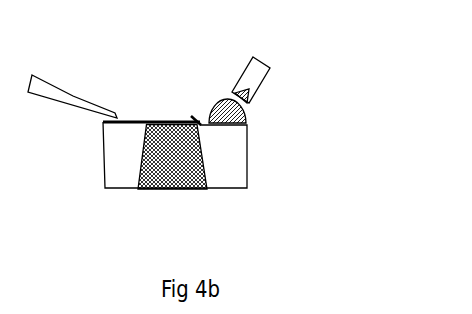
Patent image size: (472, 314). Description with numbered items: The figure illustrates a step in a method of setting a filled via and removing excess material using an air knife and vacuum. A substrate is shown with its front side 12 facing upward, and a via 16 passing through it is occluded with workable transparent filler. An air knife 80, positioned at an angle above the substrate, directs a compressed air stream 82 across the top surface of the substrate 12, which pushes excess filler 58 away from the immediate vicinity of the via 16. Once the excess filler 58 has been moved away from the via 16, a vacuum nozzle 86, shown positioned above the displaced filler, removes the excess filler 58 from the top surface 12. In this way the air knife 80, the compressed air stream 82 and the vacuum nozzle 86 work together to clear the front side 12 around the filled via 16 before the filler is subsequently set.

The front side 12 is at (103, 121).
The via 16 is at (200, 148).
The air knife 80 is at (87, 101).
The compressed air stream 82 is at (143, 122).
The vacuum nozzle 86 is at (268, 60).
The excess filler 58 is at (245, 115).